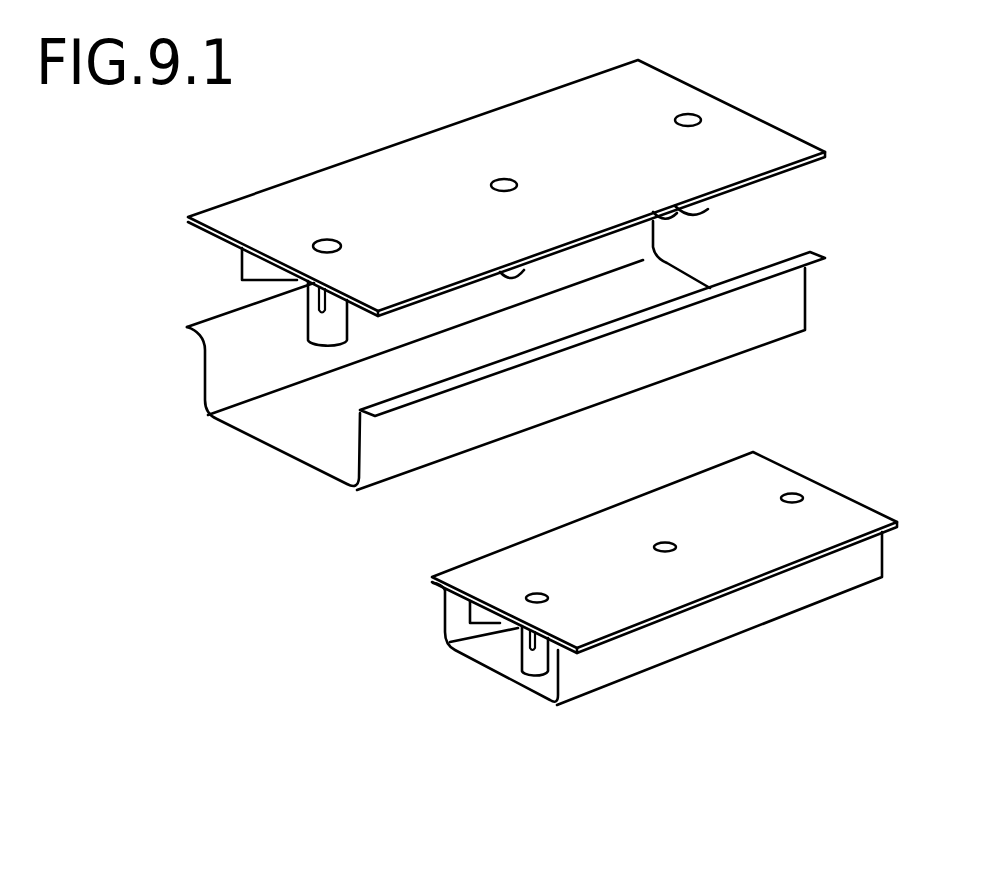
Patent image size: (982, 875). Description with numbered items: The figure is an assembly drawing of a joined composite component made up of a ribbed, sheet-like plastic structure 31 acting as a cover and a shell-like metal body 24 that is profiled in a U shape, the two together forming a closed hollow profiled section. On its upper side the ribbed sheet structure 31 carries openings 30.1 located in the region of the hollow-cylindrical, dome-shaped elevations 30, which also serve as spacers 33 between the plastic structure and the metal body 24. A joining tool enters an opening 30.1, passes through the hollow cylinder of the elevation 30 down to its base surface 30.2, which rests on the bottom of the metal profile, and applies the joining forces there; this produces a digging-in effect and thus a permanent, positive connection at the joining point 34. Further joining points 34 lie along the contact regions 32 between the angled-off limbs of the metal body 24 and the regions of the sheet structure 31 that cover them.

The shell-like metal body 24 is at (283, 436).
The dome-shaped elevation 30 is at (403, 461).
The opening 30.1 is at (325, 247).
The base surface 30.2 is at (330, 348).
The ribbed sheet structure 31 is at (531, 408).
The contact region 32 is at (228, 290).
The spacer 33 is at (530, 662).
The joining point 34 is at (432, 598).